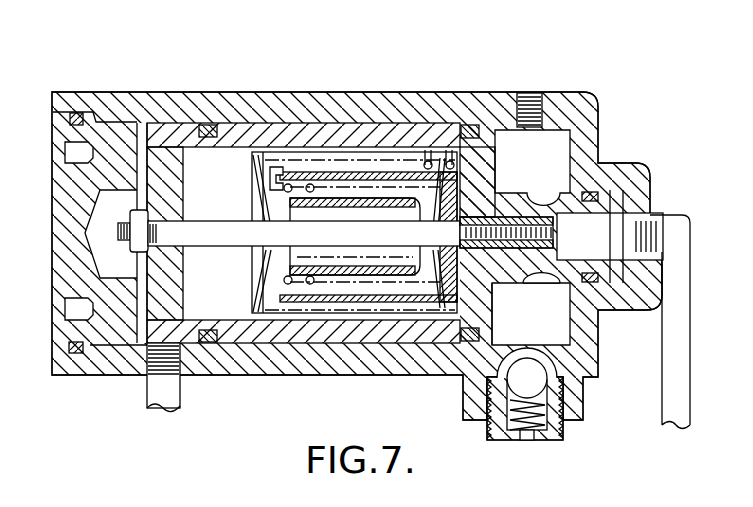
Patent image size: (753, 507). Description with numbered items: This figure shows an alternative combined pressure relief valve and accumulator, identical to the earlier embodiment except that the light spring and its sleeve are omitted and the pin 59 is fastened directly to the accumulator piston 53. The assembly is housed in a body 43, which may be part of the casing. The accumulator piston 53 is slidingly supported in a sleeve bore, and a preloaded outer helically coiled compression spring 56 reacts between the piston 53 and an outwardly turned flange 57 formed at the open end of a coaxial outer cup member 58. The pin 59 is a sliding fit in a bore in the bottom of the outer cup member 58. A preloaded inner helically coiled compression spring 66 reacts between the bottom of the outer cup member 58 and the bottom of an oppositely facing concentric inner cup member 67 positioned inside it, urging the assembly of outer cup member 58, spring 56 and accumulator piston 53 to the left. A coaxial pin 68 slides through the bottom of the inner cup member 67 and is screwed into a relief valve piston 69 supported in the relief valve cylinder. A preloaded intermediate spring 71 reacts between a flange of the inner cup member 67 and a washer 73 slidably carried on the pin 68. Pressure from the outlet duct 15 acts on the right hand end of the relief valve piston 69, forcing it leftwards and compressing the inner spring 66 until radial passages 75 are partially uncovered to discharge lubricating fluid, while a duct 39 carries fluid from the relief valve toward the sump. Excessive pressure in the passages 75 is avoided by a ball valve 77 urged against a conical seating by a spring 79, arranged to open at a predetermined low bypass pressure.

The body 43 is at (183, 105).
The accumulator piston 53 is at (238, 148).
The outer cup member 58 is at (351, 170).
The outer helically coiled compression spring 56 is at (428, 158).
The outwardly turned flange 57 is at (453, 158).
The washer 73 is at (468, 200).
The intermediate coaxial helically coiled compression spring 71 is at (284, 188).
The pin 59 is at (245, 245).
The inner helically coiled compression spring 66 is at (283, 268).
The inner cup member 67 is at (340, 271).
The pin 68 is at (452, 248).
The radial passages 75 is at (542, 267).
The relief valve piston 69 is at (505, 250).
The outlet duct 15 is at (668, 345).
The ball valve 77 is at (530, 382).
The spring 79 is at (515, 430).
The duct 39 is at (170, 395).